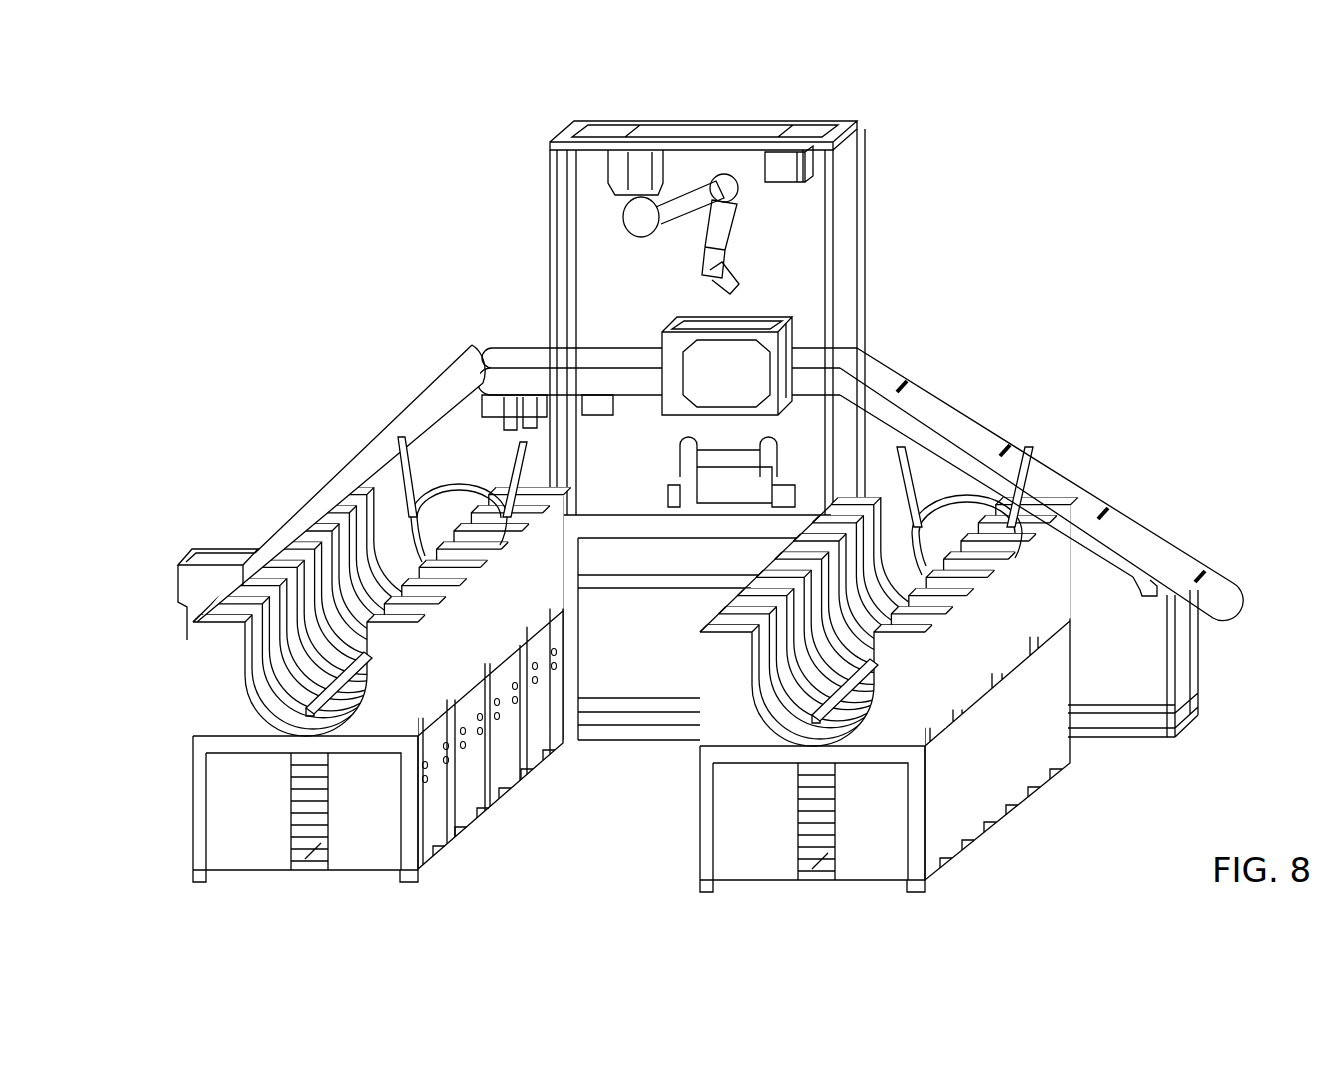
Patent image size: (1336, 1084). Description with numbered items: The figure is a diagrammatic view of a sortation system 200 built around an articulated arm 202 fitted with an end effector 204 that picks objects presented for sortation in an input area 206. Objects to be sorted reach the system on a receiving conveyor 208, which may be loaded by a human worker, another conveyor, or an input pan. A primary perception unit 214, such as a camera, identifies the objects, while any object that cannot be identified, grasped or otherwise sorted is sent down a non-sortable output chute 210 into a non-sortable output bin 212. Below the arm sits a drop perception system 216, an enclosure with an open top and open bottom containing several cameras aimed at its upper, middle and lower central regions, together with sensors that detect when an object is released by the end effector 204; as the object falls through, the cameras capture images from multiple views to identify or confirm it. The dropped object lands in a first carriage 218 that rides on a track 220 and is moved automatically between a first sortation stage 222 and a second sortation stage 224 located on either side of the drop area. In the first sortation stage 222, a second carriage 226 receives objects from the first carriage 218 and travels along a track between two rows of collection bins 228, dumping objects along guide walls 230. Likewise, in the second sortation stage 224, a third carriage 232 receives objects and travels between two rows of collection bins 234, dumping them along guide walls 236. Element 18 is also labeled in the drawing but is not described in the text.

The system 200 is at (345, 163).
The articulated arm 202 is at (632, 240).
The end effector 204 is at (697, 273).
The input area 206 is at (613, 350).
The receiving conveyor 208 is at (970, 413).
The non-sortable output chute 210 is at (385, 426).
The non-sortable output bin 212 is at (228, 548).
The primary perception unit 214 is at (795, 182).
The drop perception system 216 is at (746, 384).
The first carriage 218 is at (749, 499).
The track 220 is at (616, 515).
The first sortation stage 222 is at (358, 685).
The second sortation stage 224 is at (902, 695).
The second carriage 226 is at (463, 490).
The collection bins 228 is at (347, 809).
The guide walls 230 is at (386, 678).
The third carriage 232 is at (970, 496).
The collection bins 234 is at (854, 819).
The guide walls 236 is at (908, 689).
The workpiece bar 18 is at (307, 722).